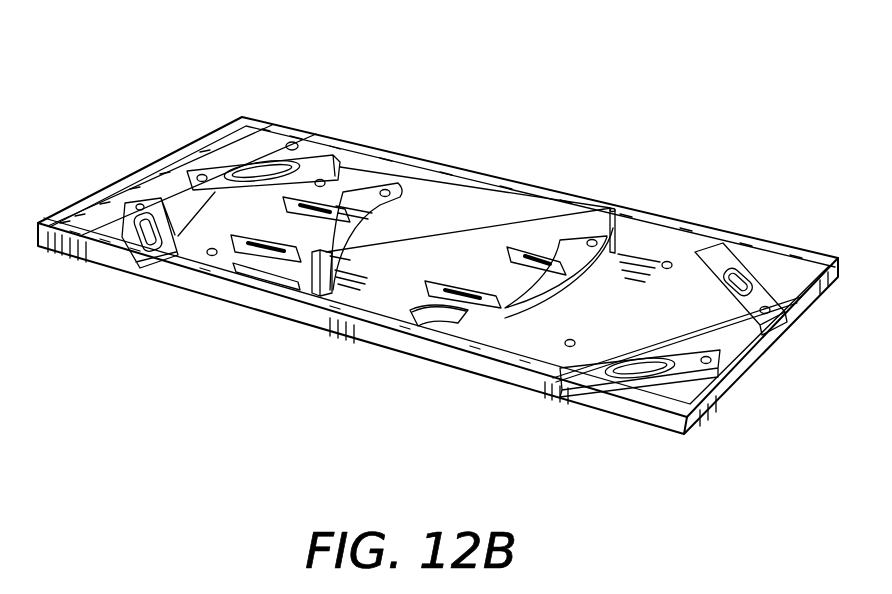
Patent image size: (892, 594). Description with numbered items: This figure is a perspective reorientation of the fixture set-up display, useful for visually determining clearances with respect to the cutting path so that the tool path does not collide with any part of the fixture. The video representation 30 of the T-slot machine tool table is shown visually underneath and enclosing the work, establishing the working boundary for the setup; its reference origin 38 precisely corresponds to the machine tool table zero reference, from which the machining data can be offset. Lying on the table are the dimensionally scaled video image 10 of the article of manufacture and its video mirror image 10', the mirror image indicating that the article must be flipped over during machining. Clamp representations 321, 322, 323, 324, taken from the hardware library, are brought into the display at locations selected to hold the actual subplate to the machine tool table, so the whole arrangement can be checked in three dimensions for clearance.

The video representation of a machine tool table 30 is at (732, 348).
The reference origin 38 is at (290, 140).
The video image of the article 10 is at (237, 315).
The video mirror image of the article 10' is at (400, 352).
The clamp representation 321 is at (747, 268).
The clamp representation 322 is at (577, 377).
The clamp representation 323 is at (260, 162).
The clamp representation 324 is at (125, 240).